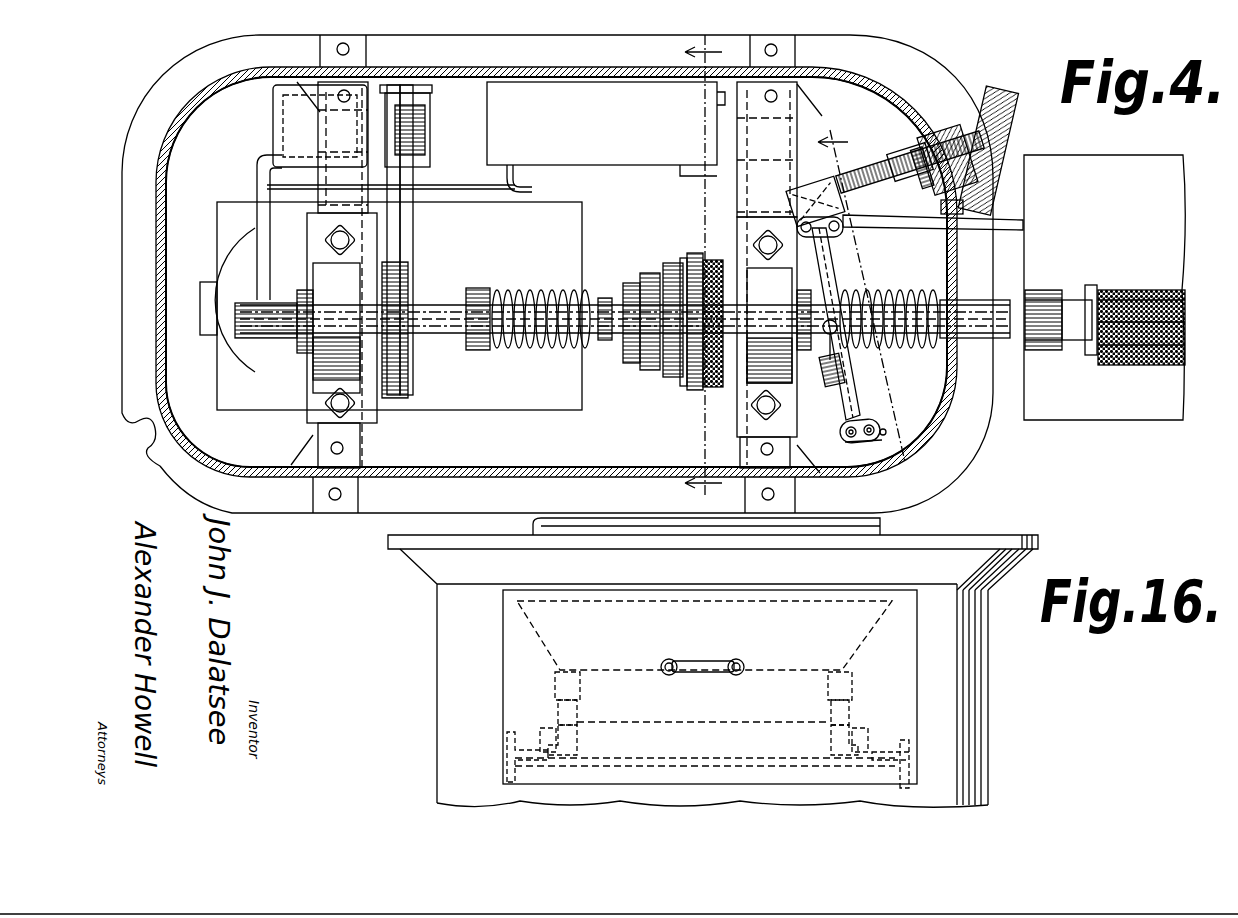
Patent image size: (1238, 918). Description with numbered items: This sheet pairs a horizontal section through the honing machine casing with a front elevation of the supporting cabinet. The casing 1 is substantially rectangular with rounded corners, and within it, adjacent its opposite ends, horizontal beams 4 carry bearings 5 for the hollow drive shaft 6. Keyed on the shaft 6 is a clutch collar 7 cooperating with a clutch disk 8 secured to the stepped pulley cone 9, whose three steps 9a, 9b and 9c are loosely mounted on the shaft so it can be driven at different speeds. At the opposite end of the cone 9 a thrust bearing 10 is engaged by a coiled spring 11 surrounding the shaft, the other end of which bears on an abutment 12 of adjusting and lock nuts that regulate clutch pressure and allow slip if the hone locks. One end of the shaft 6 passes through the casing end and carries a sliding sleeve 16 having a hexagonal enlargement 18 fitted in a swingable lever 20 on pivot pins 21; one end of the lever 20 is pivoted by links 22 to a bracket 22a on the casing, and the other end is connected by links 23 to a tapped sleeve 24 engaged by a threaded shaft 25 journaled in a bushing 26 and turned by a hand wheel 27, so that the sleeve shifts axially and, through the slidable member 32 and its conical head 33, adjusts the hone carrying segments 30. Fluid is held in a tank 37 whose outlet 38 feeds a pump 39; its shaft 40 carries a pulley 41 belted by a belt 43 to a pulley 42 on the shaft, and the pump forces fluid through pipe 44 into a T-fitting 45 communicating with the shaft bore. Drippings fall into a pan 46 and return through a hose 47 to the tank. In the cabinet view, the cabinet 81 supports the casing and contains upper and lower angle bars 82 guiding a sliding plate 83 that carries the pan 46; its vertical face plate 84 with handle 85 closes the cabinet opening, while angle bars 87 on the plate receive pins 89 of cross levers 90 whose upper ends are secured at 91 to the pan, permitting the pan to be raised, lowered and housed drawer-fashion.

In FIG. 4, the casing 1 is at (520, 472).
In FIG. 16, the casing 1 is at (892, 522).
In FIG. 4, the horizontal beams 4 is at (340, 130).
In FIG. 4, the bearings 5 is at (290, 258).
In FIG. 4, the hollow drive shaft 6 is at (418, 304).
In FIG. 4, the clutch collar 7 is at (712, 262).
In FIG. 4, the clutch disk 8 is at (690, 256).
In FIG. 4, the stepped pulley cone 9 is at (695, 392).
In FIG. 4, the step 9a is at (631, 365).
In FIG. 4, the step 9b is at (650, 372).
In FIG. 4, the step 9c is at (673, 378).
In FIG. 4, the thrust bearing 10 is at (610, 296).
In FIG. 4, the coiled spring 11 is at (530, 292).
In FIG. 4, the abutment 12 is at (486, 288).
In FIG. 4, the sliding sleeve 16 is at (956, 293).
In FIG. 4, the hexagonal enlargement 18 is at (832, 258).
In FIG. 4, the swingable lever 20 is at (842, 428).
In FIG. 4, the pivot pins 21 is at (831, 340).
In FIG. 4, the links 22 is at (850, 444).
In FIG. 4, the bracket 22a is at (895, 426).
In FIG. 4, the links 23 is at (850, 228).
In FIG. 4, the tapped sleeve 24 is at (795, 190).
In FIG. 4, the threaded shaft 25 is at (878, 172).
In FIG. 4, the bushing 26 is at (936, 126).
In FIG. 4, the hand wheel 27 is at (975, 95).
In FIG. 4, the hone carrying segments 30 is at (1130, 292).
In FIG. 4, the slidable member 32 is at (1070, 356).
In FIG. 4, the conical head 33 is at (1062, 298).
In FIG. 4, the reservoir or tank 37 is at (585, 96).
In FIG. 4, the outlet 38 is at (541, 178).
In FIG. 4, the pump 39 is at (292, 102).
In FIG. 4, the pump shaft 40 is at (442, 120).
In FIG. 4, the pulley 41 is at (420, 90).
In FIG. 4, the pulley 42 is at (420, 248).
In FIG. 4, the belt 43 is at (410, 222).
In FIG. 4, the pipe 44 is at (248, 176).
In FIG. 4, the T-fitting 45 is at (262, 340).
In FIG. 4, the pan 46 is at (1090, 168).
In FIG. 16, the pan 46 is at (880, 626).
In FIG. 4, the flexible conduit or hose 47 is at (938, 224).
In FIG. 16, the cabinet structure 81 is at (432, 680).
In FIG. 16, the angle bars 82 is at (515, 738).
In FIG. 16, the sliding plate 83 is at (682, 760).
In FIG. 16, the vertical face plate 84 is at (500, 663).
In FIG. 16, the handle 85 is at (714, 655).
In FIG. 16, the angle bars 87 is at (548, 740).
In FIG. 16, the pins 89 is at (578, 744).
In FIG. 16, the cross levers 90 is at (578, 708).
In FIG. 16, the securing points 91 is at (556, 684).